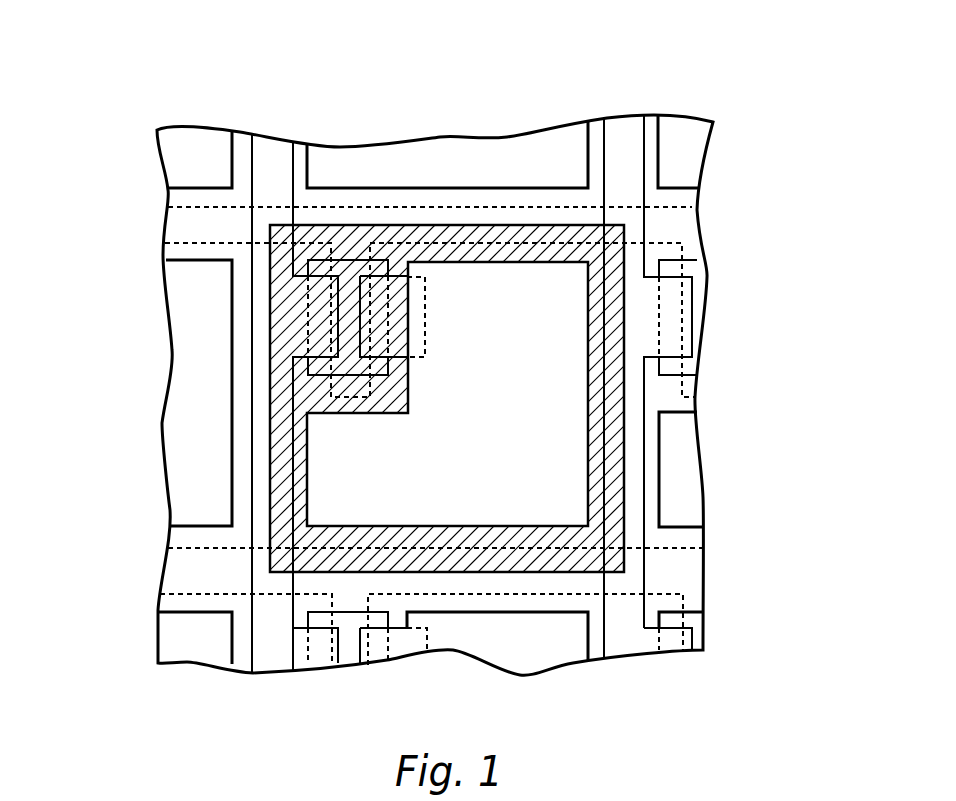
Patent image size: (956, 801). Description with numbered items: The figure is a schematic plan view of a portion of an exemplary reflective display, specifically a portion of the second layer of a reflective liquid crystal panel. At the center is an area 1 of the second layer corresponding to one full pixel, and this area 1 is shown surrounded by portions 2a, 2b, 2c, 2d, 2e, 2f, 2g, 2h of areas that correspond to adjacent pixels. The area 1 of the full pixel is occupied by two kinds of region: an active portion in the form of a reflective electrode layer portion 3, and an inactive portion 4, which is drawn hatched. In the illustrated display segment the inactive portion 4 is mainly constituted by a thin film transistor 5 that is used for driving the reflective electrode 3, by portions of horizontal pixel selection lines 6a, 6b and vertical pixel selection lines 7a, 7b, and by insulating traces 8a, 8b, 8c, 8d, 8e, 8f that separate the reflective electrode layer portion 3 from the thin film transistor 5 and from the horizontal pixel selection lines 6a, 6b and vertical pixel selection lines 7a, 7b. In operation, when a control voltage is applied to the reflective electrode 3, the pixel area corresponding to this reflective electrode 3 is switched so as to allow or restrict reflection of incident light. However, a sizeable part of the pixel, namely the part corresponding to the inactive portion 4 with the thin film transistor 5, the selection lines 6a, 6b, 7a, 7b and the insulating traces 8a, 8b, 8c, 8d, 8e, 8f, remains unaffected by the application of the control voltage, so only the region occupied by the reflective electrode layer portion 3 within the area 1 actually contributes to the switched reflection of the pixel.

The area corresponding to a full pixel 1 is at (636, 394).
The portion of area corresponding to adjacent pixel 2a is at (188, 98).
The portion of area corresponding to adjacent pixel 2b is at (458, 155).
The portion of area corresponding to adjacent pixel 2c is at (695, 152).
The portion of area corresponding to adjacent pixel 2d is at (688, 477).
The portion of area corresponding to adjacent pixel 2e is at (696, 634).
The portion of area corresponding to adjacent pixel 2f is at (445, 636).
The portion of area corresponding to adjacent pixel 2g is at (186, 653).
The portion of area corresponding to adjacent pixel 2h is at (181, 435).
The reflective electrode layer portion 3 is at (560, 482).
The inactive portion 4 is at (617, 533).
The thin film transistor 5 is at (350, 317).
The horizontal pixel selection line 6a is at (655, 228).
The horizontal pixel selection line 6b is at (655, 582).
The vertical pixel selection line 7a is at (268, 150).
The vertical pixel selection line 7b is at (627, 130).
The insulating trace 8a is at (508, 253).
The insulating trace 8b is at (597, 324).
The insulating trace 8c is at (478, 537).
The insulating trace 8d is at (298, 490).
The insulating trace 8e is at (397, 270).
The pixel electrode protrusion 8f is at (347, 407).